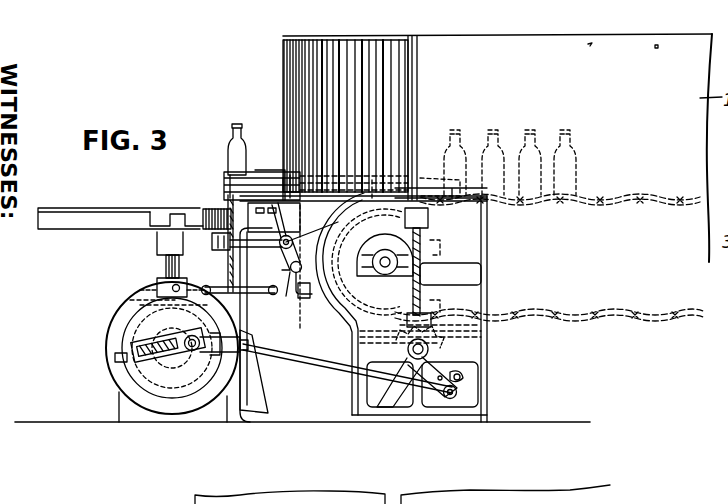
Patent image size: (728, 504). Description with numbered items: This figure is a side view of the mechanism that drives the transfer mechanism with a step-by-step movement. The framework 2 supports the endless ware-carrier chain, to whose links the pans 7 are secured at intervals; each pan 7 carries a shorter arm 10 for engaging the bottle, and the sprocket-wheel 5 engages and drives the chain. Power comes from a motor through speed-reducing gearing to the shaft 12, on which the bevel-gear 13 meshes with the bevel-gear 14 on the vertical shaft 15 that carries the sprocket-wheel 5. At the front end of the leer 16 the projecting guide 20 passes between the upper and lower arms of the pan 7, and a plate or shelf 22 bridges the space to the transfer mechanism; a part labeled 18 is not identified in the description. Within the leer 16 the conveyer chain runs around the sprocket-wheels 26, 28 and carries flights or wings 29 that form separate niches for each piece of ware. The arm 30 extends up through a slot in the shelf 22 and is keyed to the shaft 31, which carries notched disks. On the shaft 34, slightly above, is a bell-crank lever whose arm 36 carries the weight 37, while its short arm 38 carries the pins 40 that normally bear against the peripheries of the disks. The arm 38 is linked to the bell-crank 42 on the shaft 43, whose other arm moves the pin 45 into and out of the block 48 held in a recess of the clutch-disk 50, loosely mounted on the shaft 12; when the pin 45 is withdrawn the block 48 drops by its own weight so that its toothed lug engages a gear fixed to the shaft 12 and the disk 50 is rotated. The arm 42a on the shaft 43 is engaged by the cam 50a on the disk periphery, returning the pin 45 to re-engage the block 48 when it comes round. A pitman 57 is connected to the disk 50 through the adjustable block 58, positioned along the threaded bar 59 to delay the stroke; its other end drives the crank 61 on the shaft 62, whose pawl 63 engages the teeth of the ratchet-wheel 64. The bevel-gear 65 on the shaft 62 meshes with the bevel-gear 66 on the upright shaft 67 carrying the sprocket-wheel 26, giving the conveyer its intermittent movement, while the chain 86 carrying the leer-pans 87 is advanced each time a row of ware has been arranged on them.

The framework 2 is at (75, 212).
The sprocket-wheel 5 is at (166, 268).
The pan 7 is at (242, 186).
The arm 10 is at (245, 170).
The shaft 12 is at (118, 350).
The bevel-gear 13 is at (118, 332).
The bevel-gear 14 is at (125, 300).
The vertical shaft 15 is at (113, 232).
The leer 16 is at (478, 495).
The curtain rods 18 is at (300, 80).
The projecting guide 20 is at (268, 168).
The plate or shelf 22 is at (284, 184).
The sprocket-wheel 26 is at (430, 175).
The sprocket-wheel 28 is at (372, 178).
The flights or wings 29 is at (462, 176).
The arm 30 is at (278, 219).
The shaft 31 is at (338, 300).
The shaft 34 is at (385, 246).
The arm of bell-crank lever 36 is at (295, 237).
The weight 37 is at (227, 248).
The short arm of bell-crank lever 38 is at (287, 292).
The pins 40 is at (291, 268).
The bell-crank 42 is at (210, 243).
The arm 42a is at (249, 345).
The shaft 43 is at (240, 282).
The pin 45 is at (80, 283).
The block 48 is at (157, 283).
The clutch-disk 50 is at (108, 318).
The cam 50a is at (110, 374).
The pitman 57 is at (320, 370).
The adjustable block 58 is at (193, 365).
The threaded bar 59 is at (158, 364).
The crank 61 is at (436, 364).
The shaft 62 is at (430, 349).
The pawl 63 is at (463, 378).
The ratchet-wheel 64 is at (376, 347).
The bevel-gear 65 is at (407, 376).
The bevel-gear 66 is at (480, 334).
The upright shaft 67 is at (420, 263).
The chain 86 is at (608, 200).
The leer-pans 87 is at (640, 196).